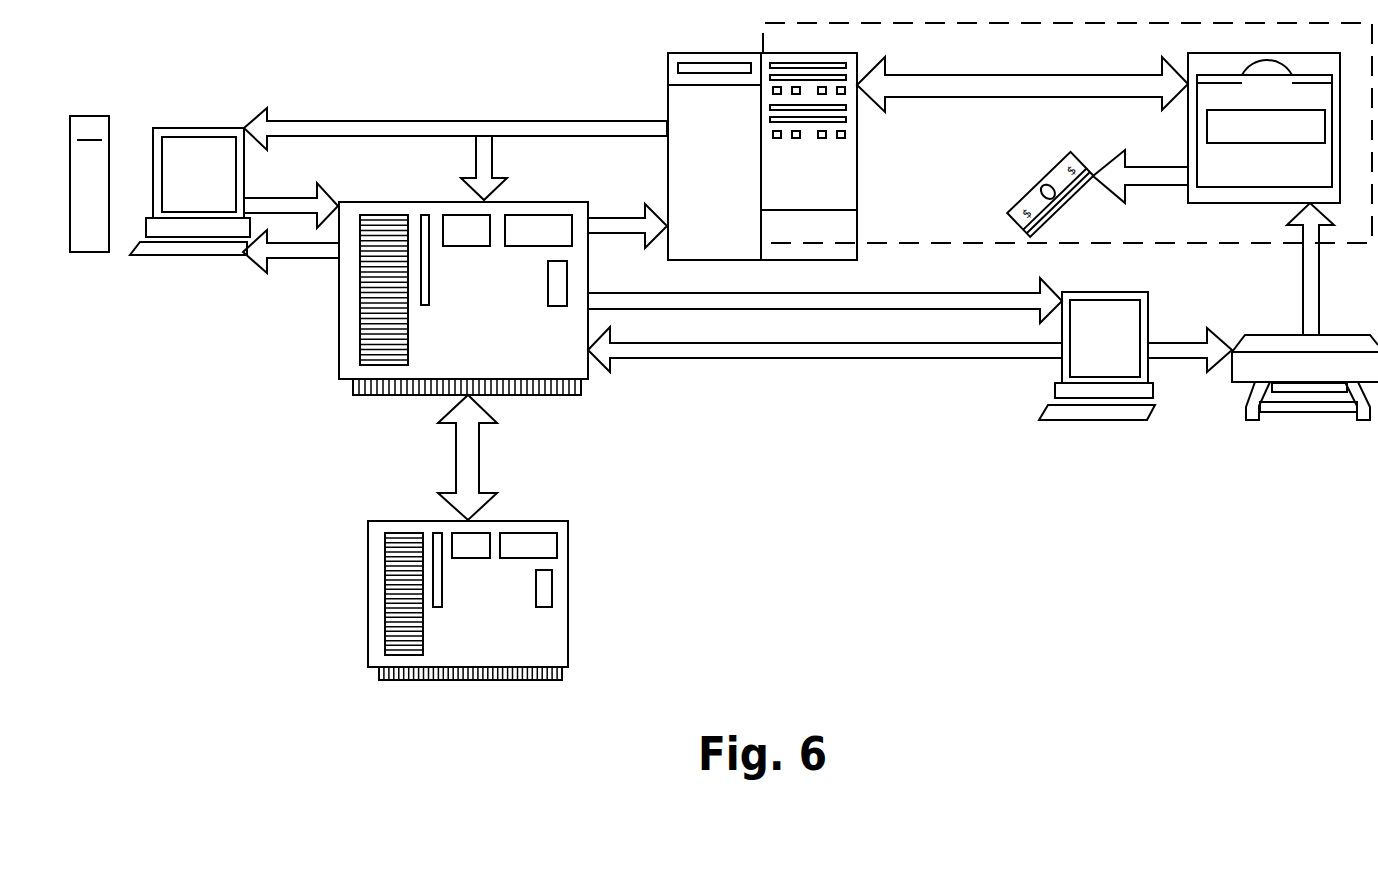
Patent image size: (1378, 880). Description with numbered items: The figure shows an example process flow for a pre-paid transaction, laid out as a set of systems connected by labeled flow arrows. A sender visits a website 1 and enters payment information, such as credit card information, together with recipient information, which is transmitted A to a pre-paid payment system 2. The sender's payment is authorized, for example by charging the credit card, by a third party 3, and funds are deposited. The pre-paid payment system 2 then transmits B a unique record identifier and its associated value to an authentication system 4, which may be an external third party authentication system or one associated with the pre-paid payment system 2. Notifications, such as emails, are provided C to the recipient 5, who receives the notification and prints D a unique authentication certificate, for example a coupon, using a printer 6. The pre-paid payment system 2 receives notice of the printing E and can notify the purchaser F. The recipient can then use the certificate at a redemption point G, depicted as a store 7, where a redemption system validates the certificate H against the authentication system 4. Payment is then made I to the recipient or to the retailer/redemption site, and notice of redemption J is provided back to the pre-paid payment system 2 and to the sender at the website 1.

The website 1 is at (160, 185).
The pre-paid payment system 2 is at (463, 298).
The third party 3 is at (468, 600).
The authentication system 4 is at (762, 156).
The recipient 5 is at (1097, 356).
The printer 6 is at (1305, 377).
The merchant store web site 7 is at (1264, 128).
The transmission of payment and recipient information A is at (291, 196).
The transmission of unique record identifier and associated value B is at (627, 217).
The notification to recipient C is at (825, 291).
The printing of authentication certificate D is at (1190, 338).
The notice of printing E is at (825, 361).
The notification to purchaser F is at (276, 256).
The use of certificate at redemption point G is at (1322, 269).
The certificate validation H is at (1022, 75).
The payment to recipient I is at (1140, 187).
The notice of redemption J is at (455, 140).